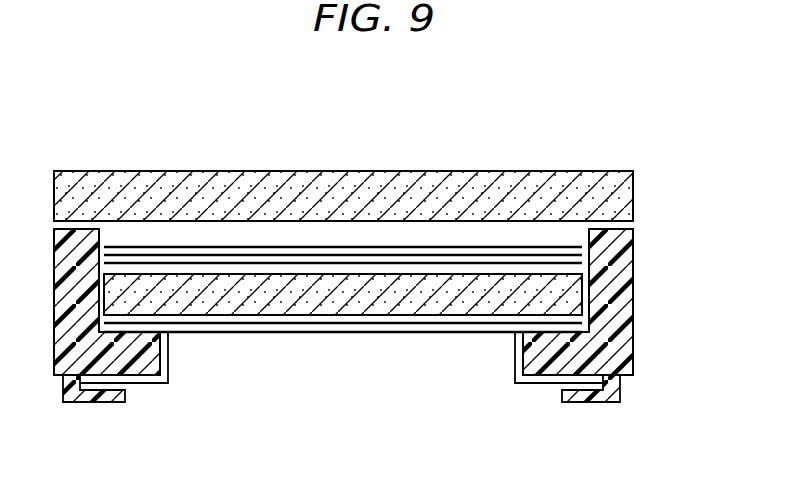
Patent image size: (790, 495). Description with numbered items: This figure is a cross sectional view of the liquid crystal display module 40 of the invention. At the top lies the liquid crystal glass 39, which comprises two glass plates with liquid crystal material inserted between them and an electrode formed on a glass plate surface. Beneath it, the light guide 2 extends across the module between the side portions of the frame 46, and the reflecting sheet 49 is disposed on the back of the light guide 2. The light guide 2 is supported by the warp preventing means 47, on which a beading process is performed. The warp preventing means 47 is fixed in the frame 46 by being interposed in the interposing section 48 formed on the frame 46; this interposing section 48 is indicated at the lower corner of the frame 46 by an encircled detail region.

The liquid crystal display module 40 is at (478, 143).
The liquid crystal glass 39 is at (633, 195).
The frame 46 is at (633, 295).
The light guide 2 is at (256, 316).
The reflecting sheet 49 is at (309, 326).
The warp preventing means 47 is at (435, 334).
The interposing section 48 is at (646, 408).